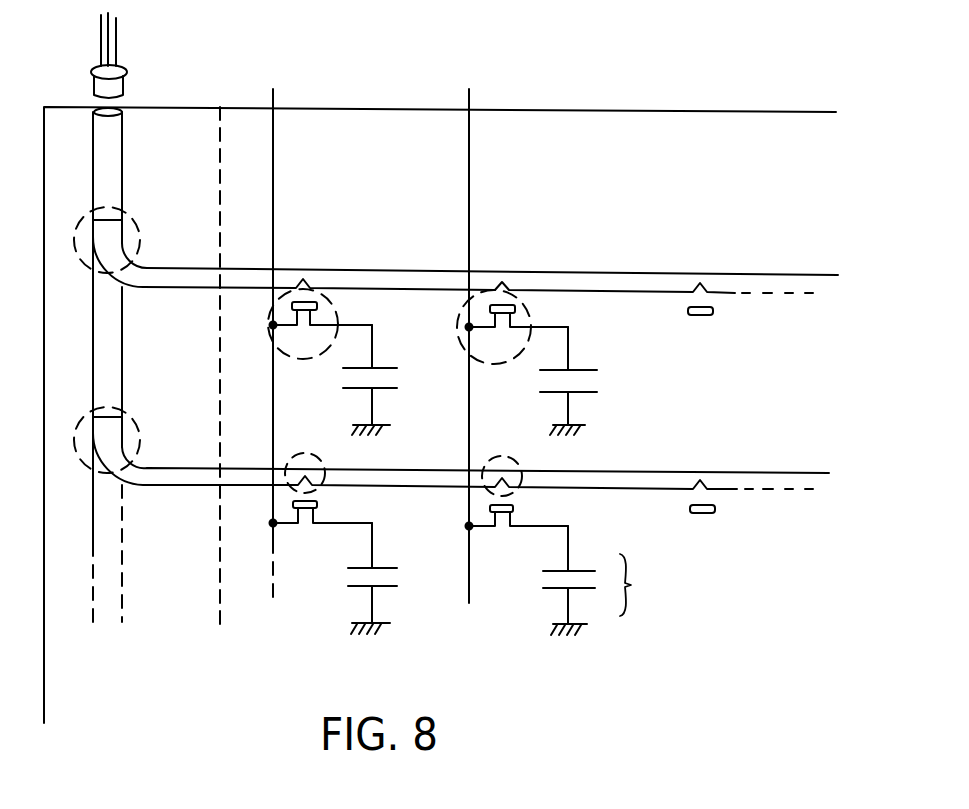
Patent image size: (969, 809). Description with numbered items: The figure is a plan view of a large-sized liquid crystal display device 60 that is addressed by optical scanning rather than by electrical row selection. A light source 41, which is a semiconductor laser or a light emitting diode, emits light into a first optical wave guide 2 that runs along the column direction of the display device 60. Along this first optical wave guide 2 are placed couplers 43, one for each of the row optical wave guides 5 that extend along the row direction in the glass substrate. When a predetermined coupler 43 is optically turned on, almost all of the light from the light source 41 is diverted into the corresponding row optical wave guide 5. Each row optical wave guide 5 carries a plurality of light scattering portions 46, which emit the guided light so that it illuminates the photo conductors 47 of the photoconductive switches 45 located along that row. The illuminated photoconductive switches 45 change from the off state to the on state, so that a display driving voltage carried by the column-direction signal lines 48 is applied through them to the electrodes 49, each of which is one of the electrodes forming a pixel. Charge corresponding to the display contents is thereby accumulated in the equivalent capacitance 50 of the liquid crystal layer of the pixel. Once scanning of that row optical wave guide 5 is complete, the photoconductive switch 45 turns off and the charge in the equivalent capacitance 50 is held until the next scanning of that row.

The display device 60 is at (684, 79).
The light source 41 is at (127, 73).
The first optical wave guide 2 is at (93, 153).
The row optical wave guide 5 is at (645, 293).
The coupler 43 is at (90, 410).
The signal line 48 is at (273, 161).
The photoconductive switch 45 is at (322, 296).
The light scattering portion 46 is at (315, 452).
The photo conductor 47 is at (318, 505).
The electrode 49 is at (384, 564).
The equivalent capacitance 50 is at (643, 585).